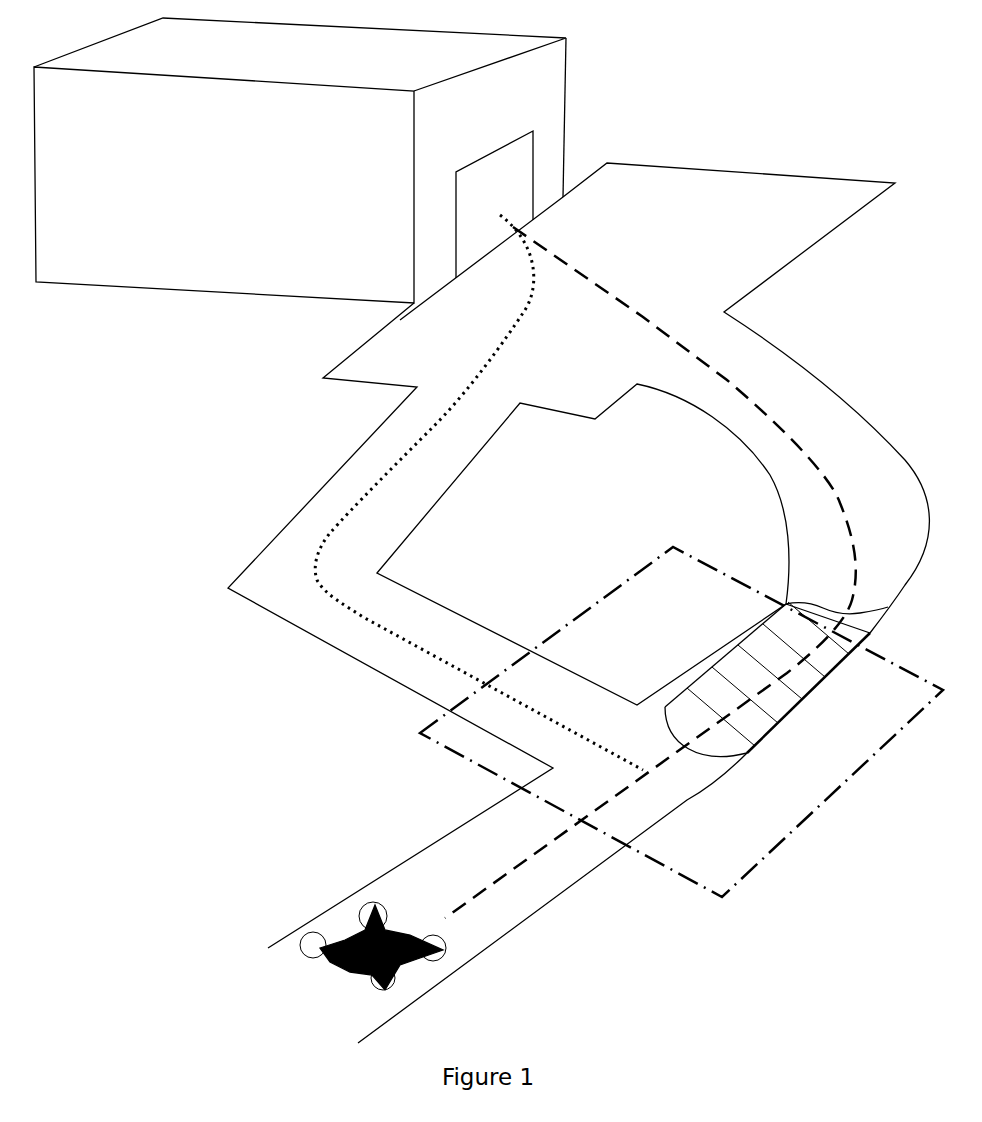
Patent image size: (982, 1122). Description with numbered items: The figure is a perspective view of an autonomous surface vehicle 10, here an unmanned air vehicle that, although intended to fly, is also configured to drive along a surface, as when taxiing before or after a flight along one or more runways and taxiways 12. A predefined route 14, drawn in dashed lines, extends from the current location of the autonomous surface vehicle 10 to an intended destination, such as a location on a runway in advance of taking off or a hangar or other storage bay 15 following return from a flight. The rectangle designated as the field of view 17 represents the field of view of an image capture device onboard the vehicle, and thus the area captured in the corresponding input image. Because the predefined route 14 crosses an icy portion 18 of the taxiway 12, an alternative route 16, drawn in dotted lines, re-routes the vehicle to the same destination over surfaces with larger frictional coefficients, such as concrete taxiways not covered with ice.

The autonomous surface vehicle 10 is at (415, 977).
The runways and taxiways 12 is at (360, 537).
The route 14 is at (842, 507).
The storage bay 15 is at (564, 83).
The alternative route 16 is at (325, 585).
The field of view 17 is at (705, 563).
The icy portion 18 is at (750, 723).